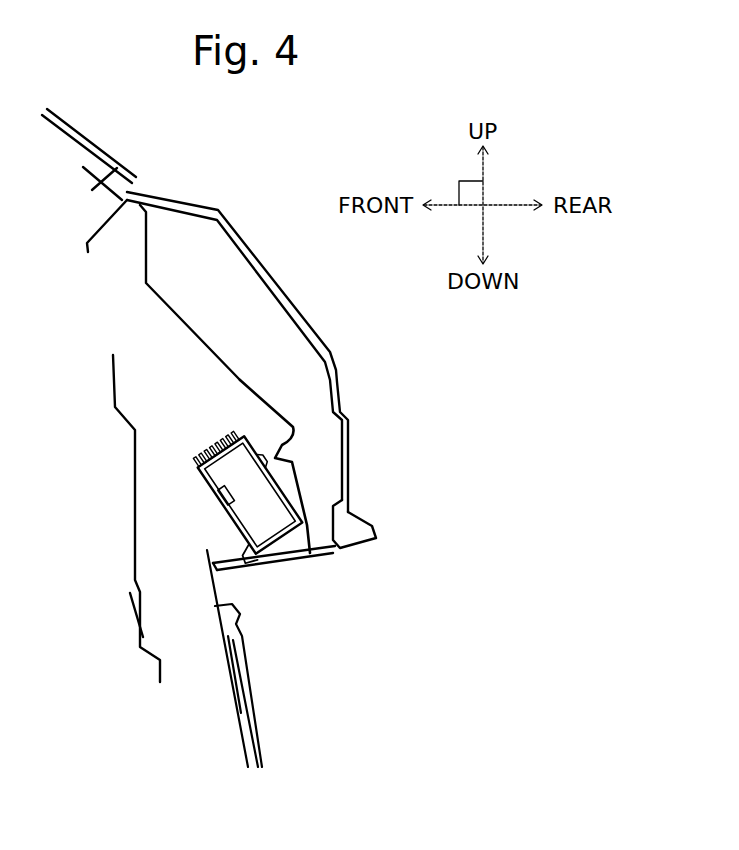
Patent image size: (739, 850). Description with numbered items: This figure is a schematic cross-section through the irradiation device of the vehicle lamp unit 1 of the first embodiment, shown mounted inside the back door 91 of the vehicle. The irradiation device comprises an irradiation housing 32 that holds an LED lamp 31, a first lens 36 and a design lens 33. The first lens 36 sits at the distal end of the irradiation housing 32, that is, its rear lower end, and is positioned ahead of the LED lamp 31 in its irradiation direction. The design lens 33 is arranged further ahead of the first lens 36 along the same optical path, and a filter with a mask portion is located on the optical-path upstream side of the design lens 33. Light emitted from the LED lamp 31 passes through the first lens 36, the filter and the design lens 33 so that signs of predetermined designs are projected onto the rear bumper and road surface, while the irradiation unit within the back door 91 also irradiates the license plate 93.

The vehicle lamp unit 1 is at (193, 478).
The LED lamp 31 is at (201, 428).
The irradiation housing 32 is at (290, 490).
The design lens 33 is at (288, 563).
The first lens 36 is at (302, 510).
The back door 91 is at (328, 335).
The license plate 93 is at (252, 697).